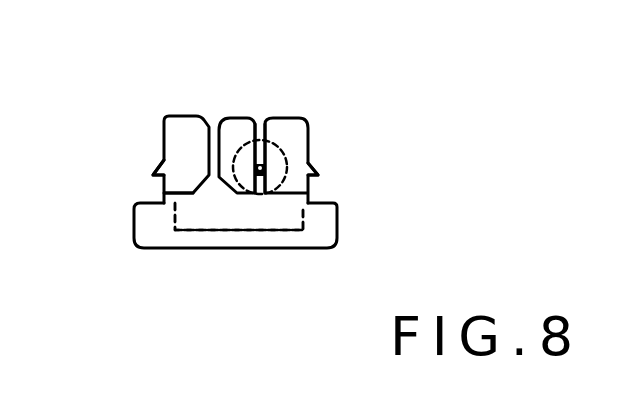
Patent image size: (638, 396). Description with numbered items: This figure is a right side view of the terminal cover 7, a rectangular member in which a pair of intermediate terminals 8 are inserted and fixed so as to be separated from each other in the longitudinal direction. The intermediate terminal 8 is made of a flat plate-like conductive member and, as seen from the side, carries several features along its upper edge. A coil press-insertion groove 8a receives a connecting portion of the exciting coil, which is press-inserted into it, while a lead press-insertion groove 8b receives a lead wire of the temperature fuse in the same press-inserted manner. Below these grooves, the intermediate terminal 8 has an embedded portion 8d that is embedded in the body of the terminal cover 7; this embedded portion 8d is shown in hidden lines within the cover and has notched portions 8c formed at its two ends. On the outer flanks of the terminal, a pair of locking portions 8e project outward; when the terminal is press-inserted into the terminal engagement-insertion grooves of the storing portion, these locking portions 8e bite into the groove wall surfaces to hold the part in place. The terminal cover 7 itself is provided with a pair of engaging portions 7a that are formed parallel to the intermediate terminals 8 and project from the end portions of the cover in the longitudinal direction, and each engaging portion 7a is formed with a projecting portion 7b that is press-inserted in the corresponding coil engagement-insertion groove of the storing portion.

The terminal cover 7 is at (338, 208).
The engaging portion 7a is at (164, 186).
The projecting portion 7b is at (203, 197).
The intermediate terminal 8 is at (307, 121).
The coil press-insertion groove 8a is at (213, 128).
The lead press-insertion groove 8b is at (263, 126).
The notched portion 8c is at (178, 206).
The embedded portion 8d is at (243, 212).
The locking portion 8e is at (158, 163).